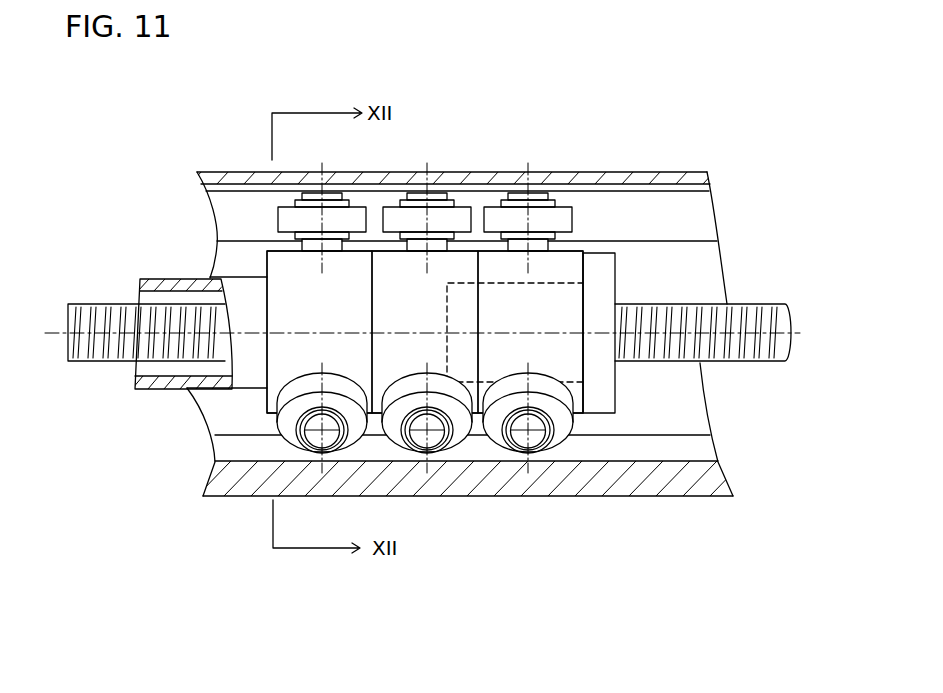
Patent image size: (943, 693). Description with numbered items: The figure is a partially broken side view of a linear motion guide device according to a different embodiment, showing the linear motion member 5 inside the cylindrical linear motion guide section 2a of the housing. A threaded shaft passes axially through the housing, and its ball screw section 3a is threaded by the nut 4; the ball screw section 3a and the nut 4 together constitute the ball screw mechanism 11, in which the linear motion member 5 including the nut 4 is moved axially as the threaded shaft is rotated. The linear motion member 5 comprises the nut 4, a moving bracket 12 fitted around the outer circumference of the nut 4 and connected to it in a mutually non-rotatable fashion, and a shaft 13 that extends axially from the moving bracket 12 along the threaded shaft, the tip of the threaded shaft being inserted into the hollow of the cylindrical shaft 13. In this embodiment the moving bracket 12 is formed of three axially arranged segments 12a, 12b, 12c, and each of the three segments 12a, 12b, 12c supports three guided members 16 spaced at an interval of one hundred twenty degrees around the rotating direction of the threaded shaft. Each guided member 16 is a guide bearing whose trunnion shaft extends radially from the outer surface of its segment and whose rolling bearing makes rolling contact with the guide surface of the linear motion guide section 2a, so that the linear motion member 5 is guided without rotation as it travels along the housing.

The linear motion guide section 2a is at (218, 173).
The guided member 16 is at (282, 213).
The ball screw mechanism 11 is at (785, 152).
The nut 4 is at (603, 278).
The ball screw section 3a is at (723, 333).
The shaft 13 is at (147, 387).
The linear motion member 5 is at (222, 401).
The moving bracket 12 is at (613, 558).
The first segment 12a is at (345, 348).
The second segment 12b is at (458, 353).
The third segment 12c is at (567, 360).